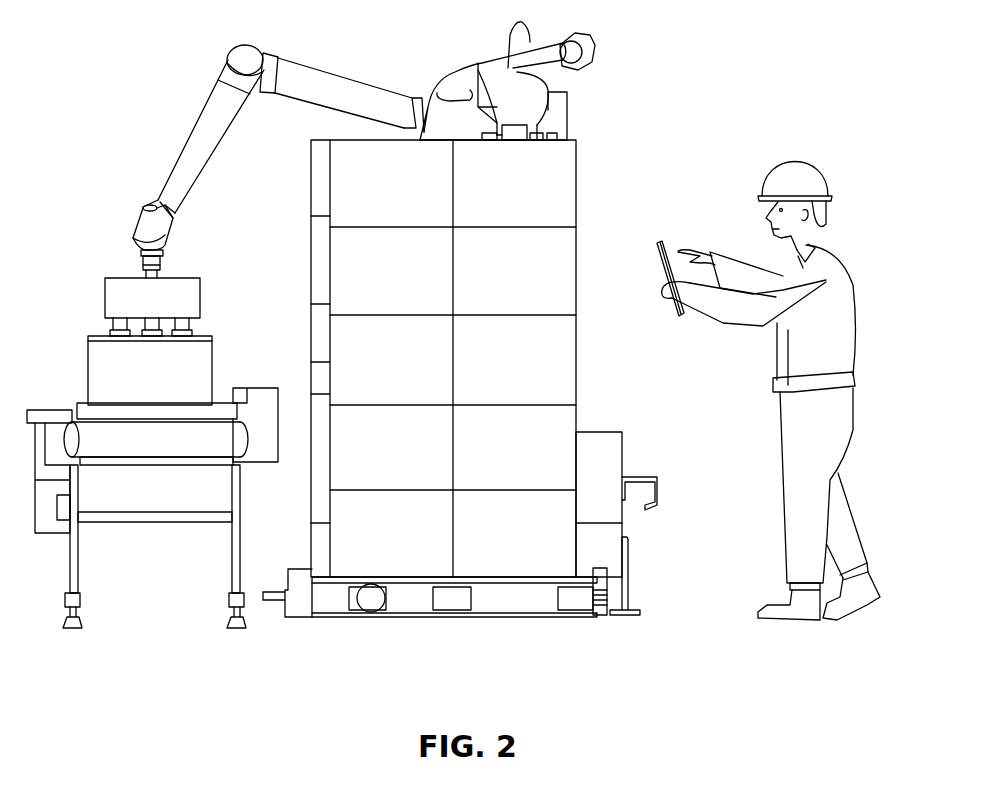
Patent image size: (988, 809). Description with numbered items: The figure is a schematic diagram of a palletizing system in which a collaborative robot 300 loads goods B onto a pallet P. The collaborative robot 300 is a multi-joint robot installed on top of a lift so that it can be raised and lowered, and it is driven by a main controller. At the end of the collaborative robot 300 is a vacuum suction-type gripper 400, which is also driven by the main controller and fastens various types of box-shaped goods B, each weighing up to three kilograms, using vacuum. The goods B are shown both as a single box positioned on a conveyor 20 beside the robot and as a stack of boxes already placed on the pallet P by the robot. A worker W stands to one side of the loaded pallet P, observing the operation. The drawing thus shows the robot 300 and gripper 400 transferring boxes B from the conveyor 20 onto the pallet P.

The collaborative robot 300 is at (183, 140).
The vacuum suction-type gripper 400 is at (105, 283).
The conveyor 20 is at (260, 388).
The goods B is at (578, 190).
The pallet P is at (460, 617).
The worker W is at (857, 312).